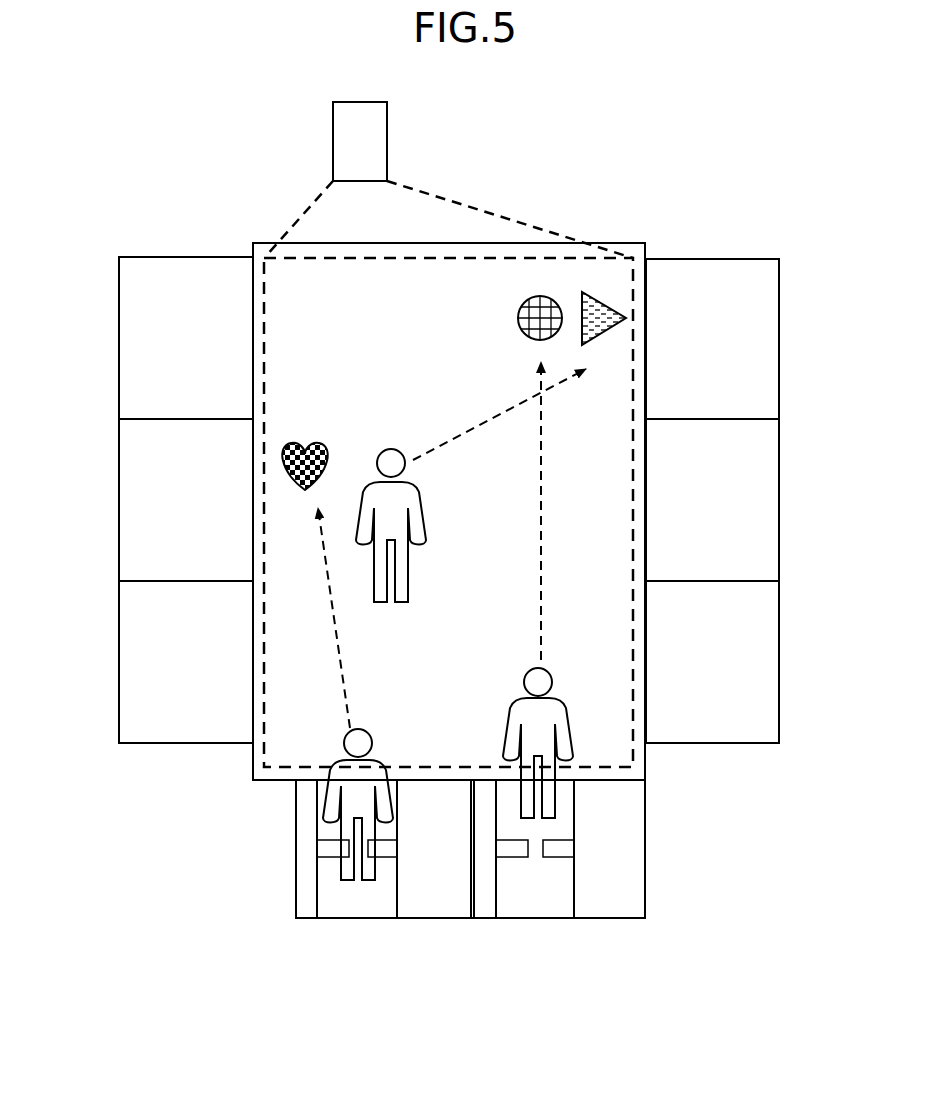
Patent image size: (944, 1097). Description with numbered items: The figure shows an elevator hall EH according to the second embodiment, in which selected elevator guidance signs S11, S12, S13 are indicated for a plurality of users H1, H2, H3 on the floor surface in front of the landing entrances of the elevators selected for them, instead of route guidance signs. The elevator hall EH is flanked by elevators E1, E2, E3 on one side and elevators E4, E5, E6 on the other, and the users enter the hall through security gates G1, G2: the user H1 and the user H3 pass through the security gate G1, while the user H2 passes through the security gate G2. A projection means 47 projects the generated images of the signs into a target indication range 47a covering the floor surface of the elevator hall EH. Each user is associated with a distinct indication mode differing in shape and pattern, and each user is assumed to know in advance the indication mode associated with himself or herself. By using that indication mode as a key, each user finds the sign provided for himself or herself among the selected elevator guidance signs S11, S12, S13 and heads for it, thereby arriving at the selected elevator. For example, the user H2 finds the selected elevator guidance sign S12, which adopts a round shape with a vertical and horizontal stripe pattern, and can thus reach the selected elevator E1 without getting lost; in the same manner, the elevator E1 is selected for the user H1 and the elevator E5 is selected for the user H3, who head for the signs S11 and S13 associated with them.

The projection means 47 is at (388, 150).
The target indication range 47a is at (510, 257).
The elevator hall EH is at (628, 243).
The selected elevator guidance sign S11 is at (613, 310).
The selected elevator guidance sign S12 is at (517, 318).
The selected elevator guidance sign S13 is at (297, 448).
The user H1 is at (398, 565).
The user H2 is at (556, 716).
The user H3 is at (367, 880).
The security gate G1 is at (442, 918).
The security gate G2 is at (617, 918).
The elevator E1 is at (781, 340).
The elevator E2 is at (781, 505).
The elevator E3 is at (781, 665).
The elevator E4 is at (119, 342).
The elevator E5 is at (119, 507).
The elevator E6 is at (119, 665).